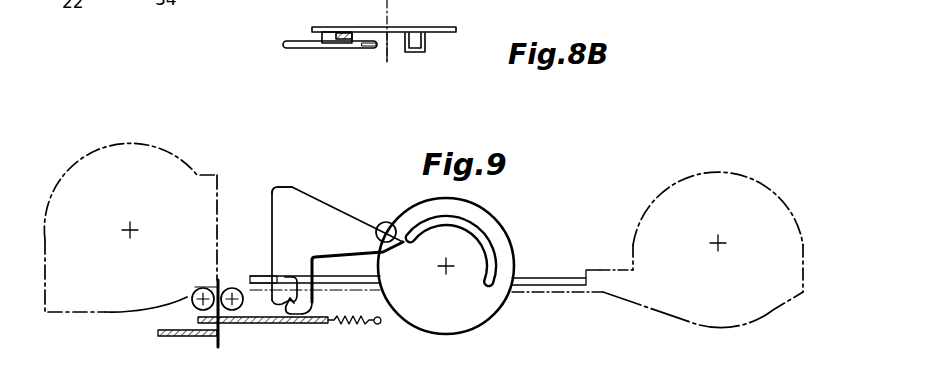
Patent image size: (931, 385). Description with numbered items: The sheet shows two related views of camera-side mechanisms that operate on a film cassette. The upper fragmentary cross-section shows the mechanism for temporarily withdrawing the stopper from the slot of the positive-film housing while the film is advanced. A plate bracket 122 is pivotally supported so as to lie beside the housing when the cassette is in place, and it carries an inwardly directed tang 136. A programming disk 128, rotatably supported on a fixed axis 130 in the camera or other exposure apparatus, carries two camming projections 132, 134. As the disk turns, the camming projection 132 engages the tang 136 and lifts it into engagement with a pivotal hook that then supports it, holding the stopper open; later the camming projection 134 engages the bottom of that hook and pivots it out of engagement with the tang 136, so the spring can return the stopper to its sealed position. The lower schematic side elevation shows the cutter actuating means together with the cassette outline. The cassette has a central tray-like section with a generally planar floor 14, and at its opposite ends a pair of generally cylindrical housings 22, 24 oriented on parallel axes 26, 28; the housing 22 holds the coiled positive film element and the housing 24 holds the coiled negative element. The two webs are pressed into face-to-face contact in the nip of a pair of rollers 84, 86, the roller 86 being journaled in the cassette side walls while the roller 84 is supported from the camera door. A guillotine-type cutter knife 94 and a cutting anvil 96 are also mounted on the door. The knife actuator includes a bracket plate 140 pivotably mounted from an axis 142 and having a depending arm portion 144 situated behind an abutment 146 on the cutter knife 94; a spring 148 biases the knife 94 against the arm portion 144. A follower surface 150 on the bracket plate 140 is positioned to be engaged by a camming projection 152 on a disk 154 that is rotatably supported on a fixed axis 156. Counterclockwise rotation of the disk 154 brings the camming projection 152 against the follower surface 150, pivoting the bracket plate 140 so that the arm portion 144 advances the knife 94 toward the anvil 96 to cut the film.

In FIG. 8B, the programming disk 128 is at (457, 31).
In FIG. 8B, the camming projection 132 is at (327, 38).
In FIG. 8B, the tang 136 is at (342, 42).
In FIG. 8B, the plate bracket 122 is at (285, 45).
In FIG. 8B, the fixed axis 130 is at (387, 48).
In FIG. 8B, the camming projection 134 is at (420, 48).
In FIG. 9, the cylindrical housing 22 is at (155, 142).
In FIG. 9, the axis 26 is at (130, 227).
In FIG. 9, the roller 84 is at (203, 288).
In FIG. 9, the roller 86 is at (230, 288).
In FIG. 9, the cutter knife 94 is at (252, 323).
In FIG. 9, the cutting anvil 96 is at (177, 340).
In FIG. 9, the floor 14 is at (522, 292).
In FIG. 9, the bracket plate 140 is at (303, 212).
In FIG. 9, the axis 142 is at (287, 200).
In FIG. 9, the abutment 146 is at (290, 275).
In FIG. 9, the follower surface 150 is at (377, 227).
In FIG. 9, the arm portion 144 is at (307, 311).
In FIG. 9, the spring 148 is at (347, 325).
In FIG. 9, the disk 154 is at (513, 248).
In FIG. 9, the camming projection 152 is at (460, 222).
In FIG. 9, the fixed axis 156 is at (443, 267).
In FIG. 9, the cylindrical housing 24 is at (718, 152).
In FIG. 9, the axis 28 is at (720, 243).